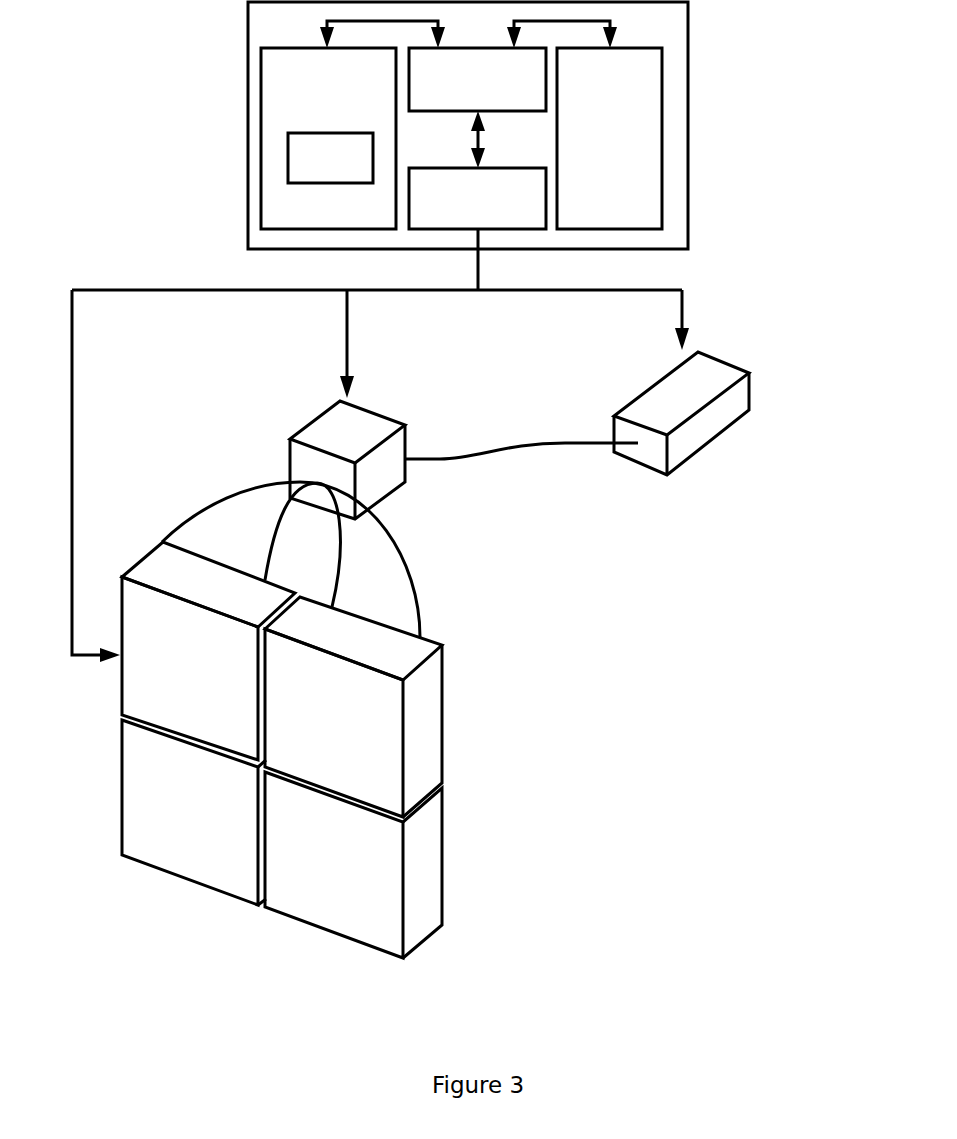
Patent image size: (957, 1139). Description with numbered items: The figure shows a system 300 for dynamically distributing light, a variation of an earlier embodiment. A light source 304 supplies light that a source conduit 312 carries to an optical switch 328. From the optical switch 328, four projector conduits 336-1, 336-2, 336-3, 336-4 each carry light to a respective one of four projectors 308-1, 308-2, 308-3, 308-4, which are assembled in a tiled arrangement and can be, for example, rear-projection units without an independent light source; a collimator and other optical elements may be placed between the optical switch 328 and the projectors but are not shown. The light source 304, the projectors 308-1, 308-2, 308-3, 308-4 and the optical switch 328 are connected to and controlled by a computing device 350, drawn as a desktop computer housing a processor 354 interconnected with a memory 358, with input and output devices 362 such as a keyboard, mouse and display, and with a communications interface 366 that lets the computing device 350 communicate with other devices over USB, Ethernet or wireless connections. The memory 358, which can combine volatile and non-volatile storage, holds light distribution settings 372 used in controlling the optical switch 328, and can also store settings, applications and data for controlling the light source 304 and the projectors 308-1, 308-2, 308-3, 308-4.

The system 300 is at (155, 91).
The computing device 350 is at (706, 120).
The memory 358 is at (309, 82).
The light distribution settings 372 is at (311, 171).
The processor 354 is at (459, 82).
The communications interface 366 is at (459, 196).
The input and output devices 362 is at (591, 129).
The optical switch 328 is at (290, 460).
The light source 304 is at (749, 412).
The source conduit 312 is at (507, 457).
The projector 308-1 is at (218, 682).
The projector 308-2 is at (359, 735).
The projector 308-3 is at (218, 828).
The projector 308-4 is at (359, 882).
The projector conduit 336-1 is at (227, 512).
The projector conduit 336-2 is at (359, 545).
The projector conduit 336-3 is at (263, 531).
The projector conduit 336-4 is at (391, 559).